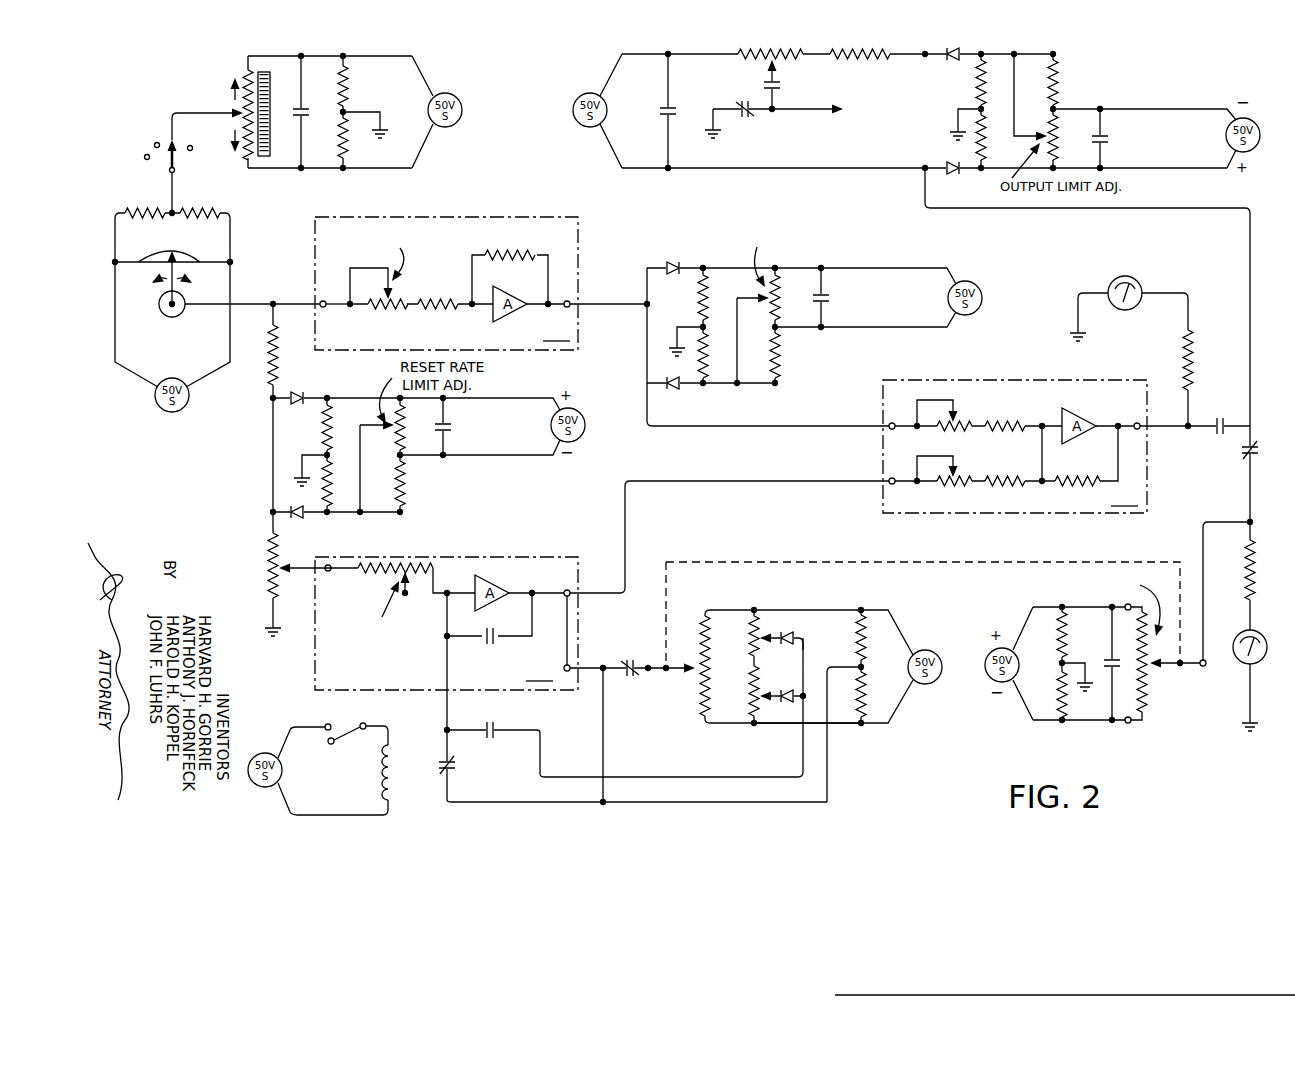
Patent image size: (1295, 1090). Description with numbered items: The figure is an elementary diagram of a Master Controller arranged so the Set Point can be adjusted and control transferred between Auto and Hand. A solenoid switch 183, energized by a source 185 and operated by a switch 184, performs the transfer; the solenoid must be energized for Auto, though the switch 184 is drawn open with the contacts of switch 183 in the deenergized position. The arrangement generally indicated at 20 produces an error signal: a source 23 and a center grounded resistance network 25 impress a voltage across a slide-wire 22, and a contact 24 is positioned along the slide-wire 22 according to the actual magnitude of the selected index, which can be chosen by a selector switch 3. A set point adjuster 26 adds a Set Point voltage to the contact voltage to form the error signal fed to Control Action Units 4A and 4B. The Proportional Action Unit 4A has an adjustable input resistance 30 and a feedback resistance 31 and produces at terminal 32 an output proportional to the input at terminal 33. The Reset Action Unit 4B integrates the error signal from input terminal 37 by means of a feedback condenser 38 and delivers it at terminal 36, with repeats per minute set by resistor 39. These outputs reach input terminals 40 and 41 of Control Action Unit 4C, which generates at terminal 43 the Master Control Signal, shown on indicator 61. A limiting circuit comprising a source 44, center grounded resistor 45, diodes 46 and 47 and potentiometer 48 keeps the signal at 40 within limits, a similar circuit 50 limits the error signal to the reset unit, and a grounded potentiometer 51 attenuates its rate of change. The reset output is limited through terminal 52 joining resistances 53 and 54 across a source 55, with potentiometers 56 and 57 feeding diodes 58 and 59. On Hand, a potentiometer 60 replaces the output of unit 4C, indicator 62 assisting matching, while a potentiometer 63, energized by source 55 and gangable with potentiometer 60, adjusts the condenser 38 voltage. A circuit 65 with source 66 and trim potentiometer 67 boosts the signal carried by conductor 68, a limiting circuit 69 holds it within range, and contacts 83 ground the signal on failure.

The selector switch 3 is at (170, 172).
The error signal producing arrangement 20 is at (206, 174).
The slide-wire 22 is at (244, 76).
The source 23 is at (457, 97).
The contact 24 is at (214, 110).
The center grounded resistance network 25 is at (348, 92).
The set point adjuster 26 is at (159, 306).
The adjustable resistance 30 is at (407, 300).
The resistance 31 is at (520, 250).
The output terminal 32 is at (566, 300).
The input terminal 33 is at (323, 309).
The output terminal 36 is at (567, 586).
The input terminal 37 is at (328, 563).
The feedback condenser 38 is at (490, 648).
The resistor 39 is at (382, 572).
The input terminal 40 is at (889, 429).
The input terminal 41 is at (889, 484).
The output terminal 43 is at (1137, 420).
The source 44 is at (981, 305).
The center grounded resistor 45 is at (700, 292).
The diode 46 is at (671, 261).
The diode 47 is at (671, 393).
The potentiometer 48 is at (766, 302).
The limiting circuit 50 is at (360, 421).
The grounded potentiometer 51 is at (278, 585).
The terminal 52 is at (865, 676).
The resistance 53 is at (865, 624).
The resistance 54 is at (866, 716).
The source 55 is at (940, 682).
The potentiometer 56 is at (752, 612).
The potentiometer 57 is at (752, 712).
The diode 58 is at (791, 632).
The diode 59 is at (789, 706).
The potentiometer 60 is at (1151, 688).
The indicator 61 is at (1115, 280).
The indicator 62 is at (1240, 634).
The potentiometer 63 is at (699, 680).
The circuit 65 is at (654, 151).
The source of potential 66 is at (580, 122).
The trim potentiometer 67 is at (766, 62).
The conductor 68 is at (818, 114).
The limiting circuit 69 is at (962, 90).
The contacts 83 is at (781, 87).
The solenoid switch 183 is at (1220, 418).
The switch 184 is at (366, 721).
The source 185 is at (279, 783).
The Proportional Action Unit 4A is at (446, 274).
The Reset Action Unit 4B is at (446, 614).
The Control Action Unit 4C is at (1010, 437).